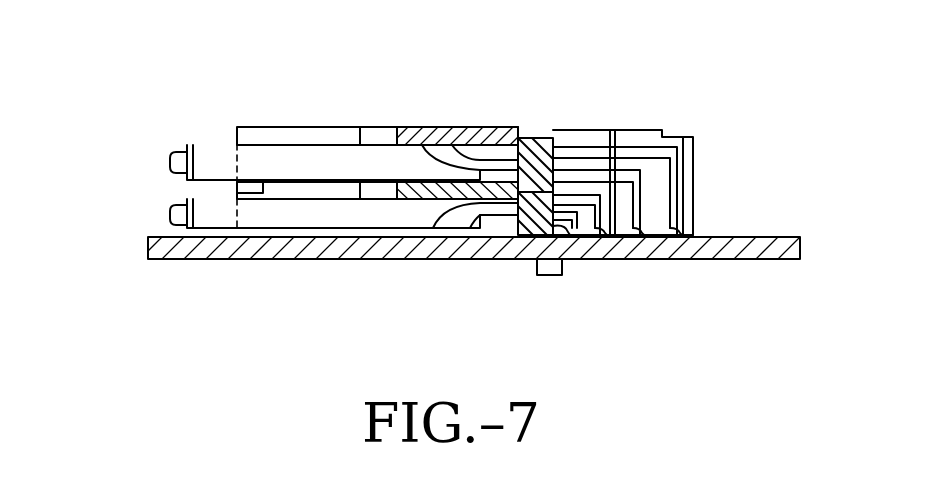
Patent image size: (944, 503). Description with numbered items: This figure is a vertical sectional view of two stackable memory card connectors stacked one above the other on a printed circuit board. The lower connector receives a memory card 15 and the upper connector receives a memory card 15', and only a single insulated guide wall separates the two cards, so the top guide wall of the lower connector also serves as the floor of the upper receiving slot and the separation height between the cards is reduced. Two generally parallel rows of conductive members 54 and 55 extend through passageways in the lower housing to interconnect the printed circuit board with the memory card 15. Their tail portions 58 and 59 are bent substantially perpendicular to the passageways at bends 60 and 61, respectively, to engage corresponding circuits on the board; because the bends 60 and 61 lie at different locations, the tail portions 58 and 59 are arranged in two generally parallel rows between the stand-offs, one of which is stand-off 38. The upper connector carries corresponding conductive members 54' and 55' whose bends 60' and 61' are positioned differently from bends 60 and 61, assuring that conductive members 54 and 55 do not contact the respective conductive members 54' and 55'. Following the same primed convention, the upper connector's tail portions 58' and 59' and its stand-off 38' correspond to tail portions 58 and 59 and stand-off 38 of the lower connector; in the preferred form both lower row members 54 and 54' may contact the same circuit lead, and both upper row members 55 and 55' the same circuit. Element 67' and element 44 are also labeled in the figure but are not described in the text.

The memory card 15 is at (283, 212).
The memory card 15' is at (281, 151).
The conductive member 54 is at (382, 252).
The conductive member 54' is at (382, 110).
The conductive member 55 is at (440, 261).
The conductive member 55' is at (457, 104).
The insulating block 67' is at (517, 156).
The bend 60 is at (580, 160).
The bend 60' is at (616, 132).
The bend 61 is at (595, 148).
The bend 61' is at (648, 159).
The stand-off 38 is at (673, 215).
The housing 38' is at (676, 182).
The mounting tab 44 is at (560, 276).
The tail portion 58 is at (592, 282).
The contact foot 58' is at (668, 285).
The tail portion 59 is at (634, 267).
The contact foot 59' is at (715, 266).